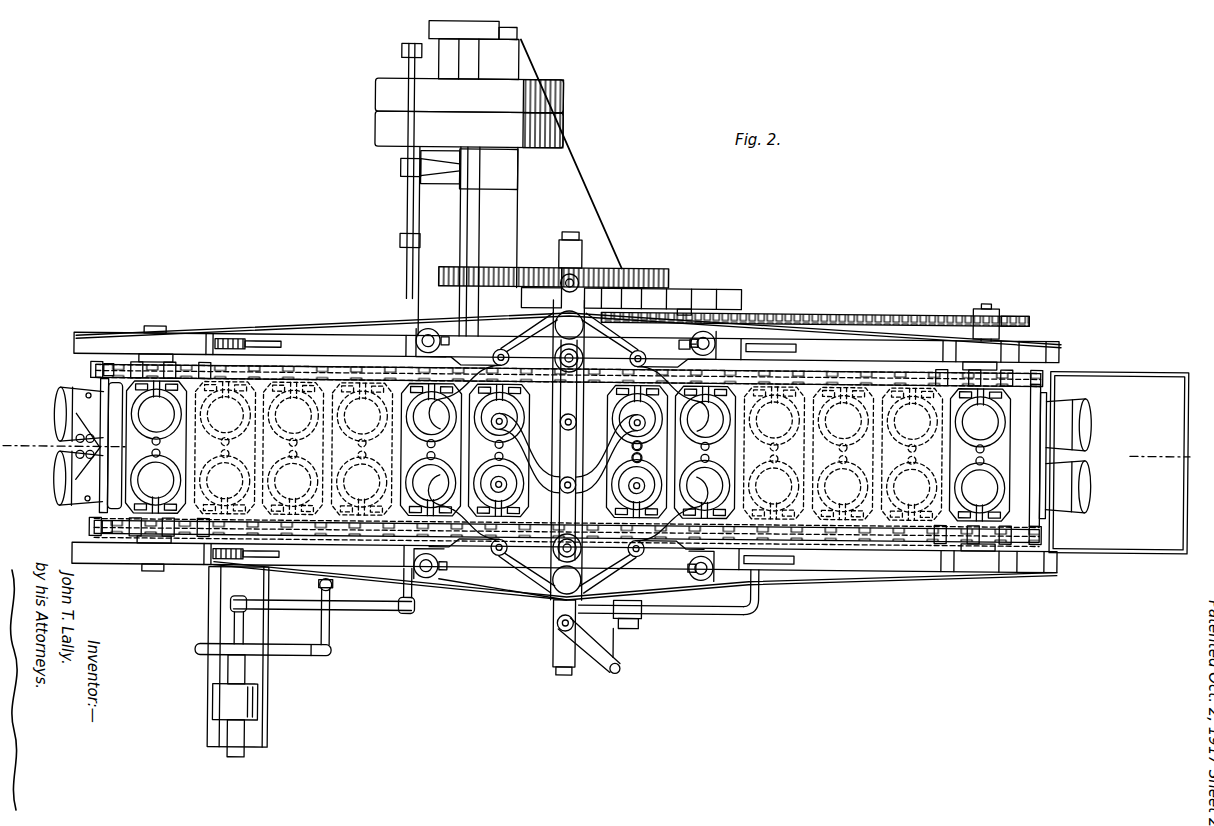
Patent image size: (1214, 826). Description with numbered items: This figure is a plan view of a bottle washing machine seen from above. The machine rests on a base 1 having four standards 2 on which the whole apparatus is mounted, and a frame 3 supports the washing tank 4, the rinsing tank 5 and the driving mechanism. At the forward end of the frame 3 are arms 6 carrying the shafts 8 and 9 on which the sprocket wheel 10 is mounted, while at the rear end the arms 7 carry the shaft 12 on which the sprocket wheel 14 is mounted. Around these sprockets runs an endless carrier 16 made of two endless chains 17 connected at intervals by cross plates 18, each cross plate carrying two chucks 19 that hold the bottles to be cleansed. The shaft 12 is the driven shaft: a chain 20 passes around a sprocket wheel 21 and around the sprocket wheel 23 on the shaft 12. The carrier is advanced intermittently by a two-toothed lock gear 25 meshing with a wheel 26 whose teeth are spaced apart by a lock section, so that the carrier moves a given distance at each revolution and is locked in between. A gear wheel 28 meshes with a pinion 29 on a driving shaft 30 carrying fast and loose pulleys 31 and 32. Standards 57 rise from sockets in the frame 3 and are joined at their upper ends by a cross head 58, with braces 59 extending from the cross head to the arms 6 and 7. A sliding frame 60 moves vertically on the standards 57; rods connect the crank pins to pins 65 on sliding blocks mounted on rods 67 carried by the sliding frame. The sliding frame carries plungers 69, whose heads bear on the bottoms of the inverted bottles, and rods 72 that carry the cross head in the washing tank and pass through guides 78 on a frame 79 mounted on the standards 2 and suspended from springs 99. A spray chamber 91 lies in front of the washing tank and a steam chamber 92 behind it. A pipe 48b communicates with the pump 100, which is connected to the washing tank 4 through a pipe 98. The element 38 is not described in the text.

The base 1 is at (604, 453).
The standards 2 is at (437, 338).
The frame 3 is at (520, 585).
The washing tank 4 is at (492, 352).
The rinsing tank 5 is at (647, 556).
The arms 6 is at (239, 449).
The arms 7 is at (899, 457).
The shaft 8 is at (154, 576).
The shaft 9 is at (78, 490).
The sprocket wheel 10 is at (168, 352).
The shaft 12 is at (985, 305).
The sprocket wheel 14 is at (978, 370).
The endless carrier 16 is at (1008, 434).
The endless chains 17 is at (110, 532).
The cross plates 18 is at (631, 453).
The chucks 19 is at (60, 495).
The chain 20 is at (800, 314).
The sprocket wheel 21 is at (684, 312).
The sprocket wheel 23 is at (1005, 313).
The lock gear 25 is at (541, 298).
The wheel 26 is at (741, 298).
The gear wheel 28 is at (646, 265).
The pinion 29 is at (450, 270).
The driving shaft 30 is at (477, 220).
The fast pulley 31 is at (560, 96).
The loose pulley 32 is at (560, 128).
The table 38 is at (1178, 490).
The pipe 48b is at (334, 590).
The standards 57 is at (568, 452).
The cross head 58 is at (556, 477).
The braces 59 is at (340, 332).
The sliding frame 60 is at (607, 455).
The pins 65 is at (572, 237).
The rods 67 is at (577, 278).
The plungers 69 is at (508, 422).
The rods 72 is at (582, 354).
The guides 78 is at (450, 400).
The frame 79 is at (433, 564).
The spray chamber 91 is at (222, 452).
The steam chamber 92 is at (905, 484).
The pipe 98 is at (385, 615).
The springs 99 is at (680, 341).
The pump 100 is at (280, 660).